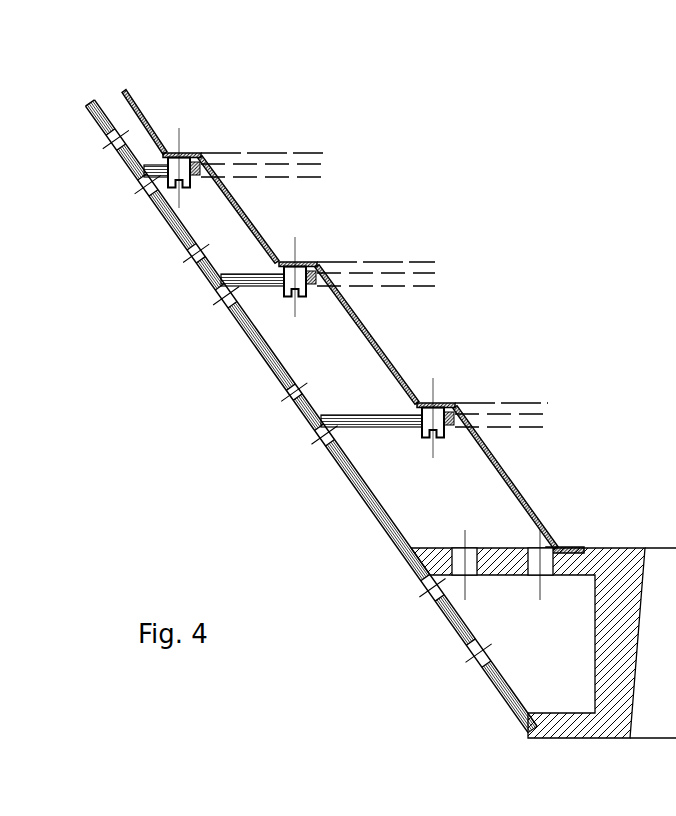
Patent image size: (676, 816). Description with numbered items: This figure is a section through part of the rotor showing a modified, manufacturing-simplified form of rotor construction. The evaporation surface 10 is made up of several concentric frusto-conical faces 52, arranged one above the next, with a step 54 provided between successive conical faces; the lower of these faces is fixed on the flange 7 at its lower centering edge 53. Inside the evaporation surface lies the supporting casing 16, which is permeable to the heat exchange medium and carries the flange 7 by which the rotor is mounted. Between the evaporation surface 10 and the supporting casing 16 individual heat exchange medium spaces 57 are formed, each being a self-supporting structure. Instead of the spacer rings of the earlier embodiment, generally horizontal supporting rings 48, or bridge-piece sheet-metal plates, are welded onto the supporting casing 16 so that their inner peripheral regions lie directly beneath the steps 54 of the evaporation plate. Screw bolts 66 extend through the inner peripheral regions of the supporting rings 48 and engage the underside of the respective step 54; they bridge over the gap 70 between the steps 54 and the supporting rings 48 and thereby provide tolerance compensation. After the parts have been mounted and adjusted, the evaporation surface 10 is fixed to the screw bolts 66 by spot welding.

The flange 7 is at (490, 645).
The evaporation surface 10 is at (535, 505).
The supporting casing 16 is at (452, 623).
The supporting rings 48 is at (147, 198).
The frusto-conical concentric faces 52 is at (508, 480).
The lower centering edge 53 is at (563, 547).
The step 54 is at (192, 153).
The heat exchange medium space 57 is at (120, 118).
The screw bolts 66 is at (372, 628).
The gap 70 is at (146, 159).